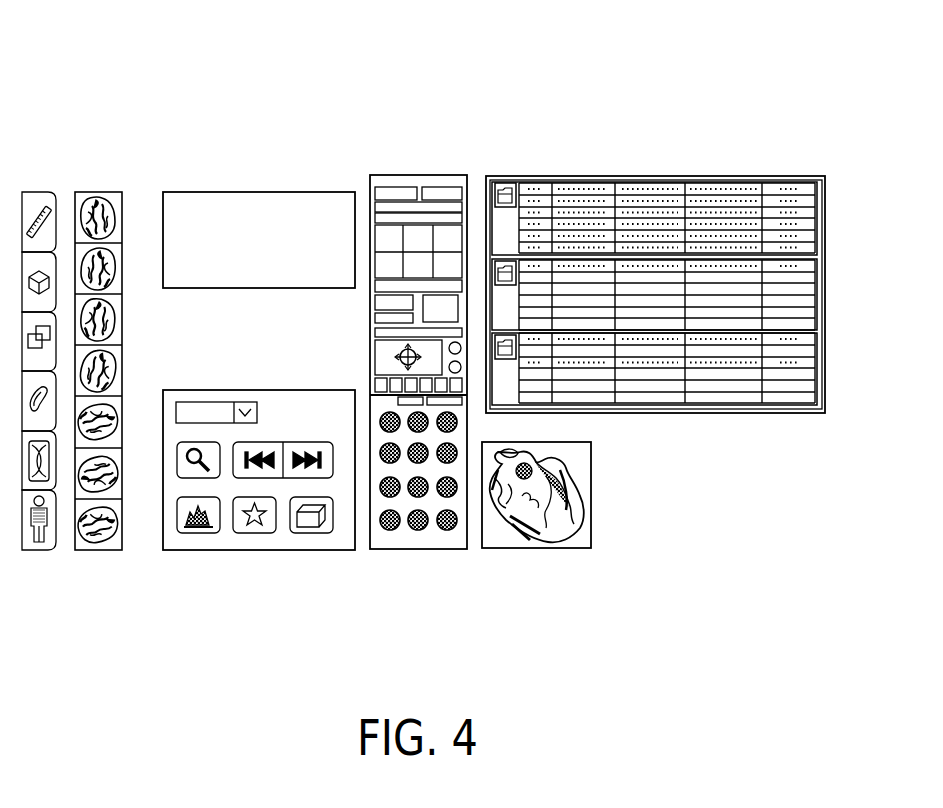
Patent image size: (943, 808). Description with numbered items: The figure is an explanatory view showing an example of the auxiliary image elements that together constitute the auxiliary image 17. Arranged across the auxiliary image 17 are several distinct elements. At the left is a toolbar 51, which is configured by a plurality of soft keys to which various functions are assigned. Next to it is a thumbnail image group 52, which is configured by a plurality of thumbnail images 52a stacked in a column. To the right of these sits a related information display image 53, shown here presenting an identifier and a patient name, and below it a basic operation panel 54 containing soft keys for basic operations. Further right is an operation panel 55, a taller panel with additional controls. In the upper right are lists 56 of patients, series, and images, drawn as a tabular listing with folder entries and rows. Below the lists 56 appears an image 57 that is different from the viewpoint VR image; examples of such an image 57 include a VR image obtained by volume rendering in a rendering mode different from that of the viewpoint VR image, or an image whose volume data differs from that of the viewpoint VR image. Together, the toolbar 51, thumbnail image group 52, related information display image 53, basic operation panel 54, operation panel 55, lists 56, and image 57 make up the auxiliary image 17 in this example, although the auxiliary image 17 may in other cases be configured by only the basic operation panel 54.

The auxiliary image 17 is at (589, 84).
The toolbar 51 is at (35, 191).
The thumbnail image group 52 is at (97, 191).
The thumbnail image 52a is at (118, 492).
The related information display image 53 is at (258, 191).
The basic operation panel 54 is at (240, 551).
The operation panel 55 is at (419, 174).
The lists of patients, series, and images 56 is at (654, 175).
The image different from the viewpoint VR image 57 is at (535, 550).